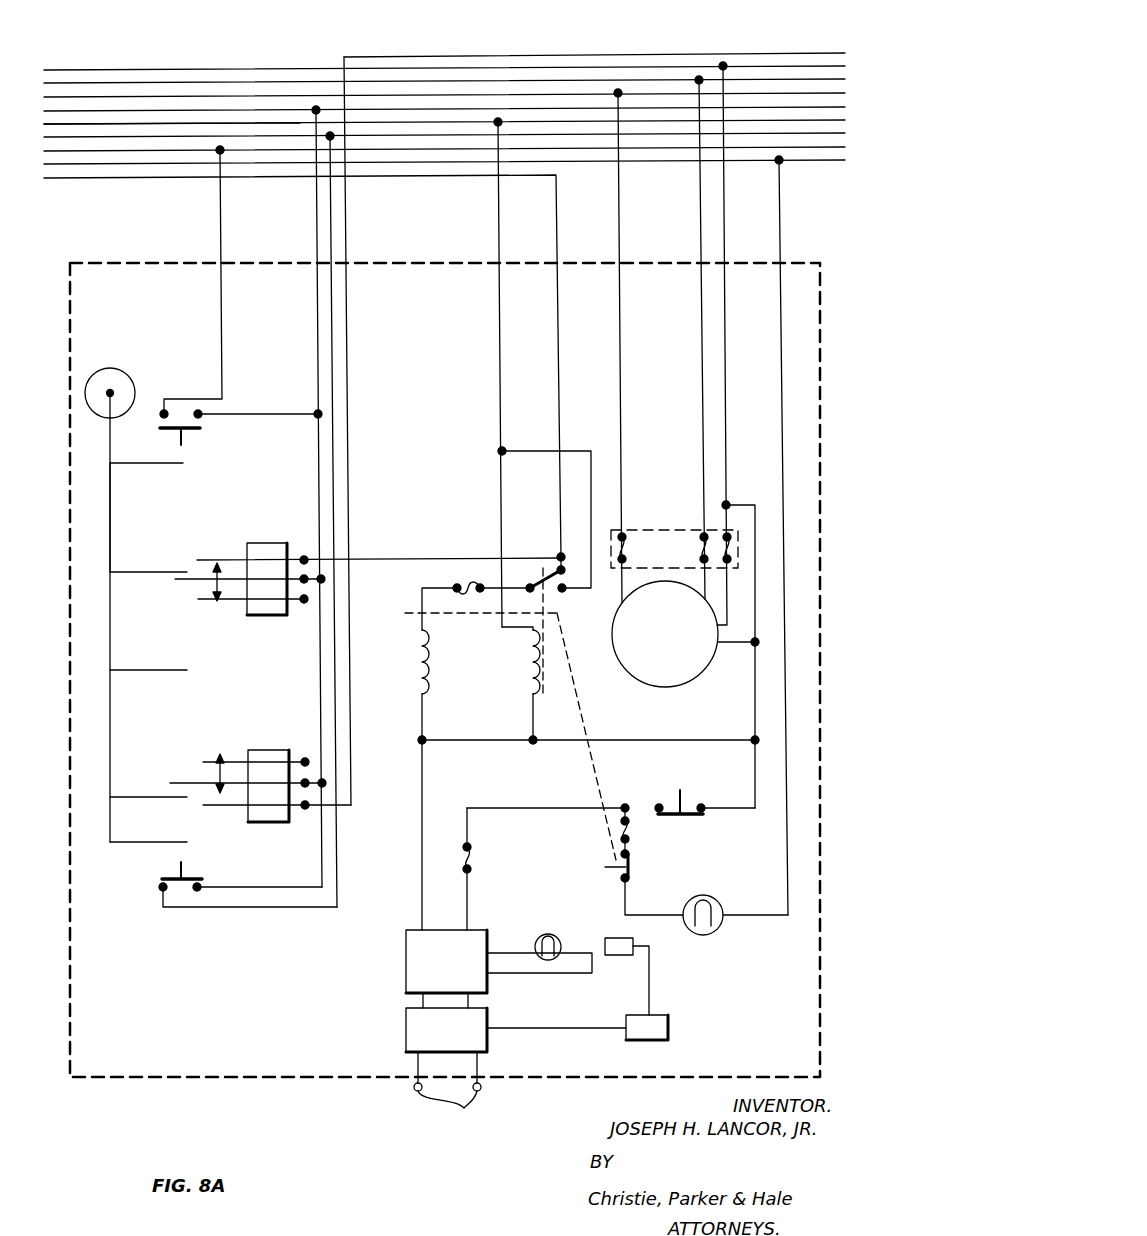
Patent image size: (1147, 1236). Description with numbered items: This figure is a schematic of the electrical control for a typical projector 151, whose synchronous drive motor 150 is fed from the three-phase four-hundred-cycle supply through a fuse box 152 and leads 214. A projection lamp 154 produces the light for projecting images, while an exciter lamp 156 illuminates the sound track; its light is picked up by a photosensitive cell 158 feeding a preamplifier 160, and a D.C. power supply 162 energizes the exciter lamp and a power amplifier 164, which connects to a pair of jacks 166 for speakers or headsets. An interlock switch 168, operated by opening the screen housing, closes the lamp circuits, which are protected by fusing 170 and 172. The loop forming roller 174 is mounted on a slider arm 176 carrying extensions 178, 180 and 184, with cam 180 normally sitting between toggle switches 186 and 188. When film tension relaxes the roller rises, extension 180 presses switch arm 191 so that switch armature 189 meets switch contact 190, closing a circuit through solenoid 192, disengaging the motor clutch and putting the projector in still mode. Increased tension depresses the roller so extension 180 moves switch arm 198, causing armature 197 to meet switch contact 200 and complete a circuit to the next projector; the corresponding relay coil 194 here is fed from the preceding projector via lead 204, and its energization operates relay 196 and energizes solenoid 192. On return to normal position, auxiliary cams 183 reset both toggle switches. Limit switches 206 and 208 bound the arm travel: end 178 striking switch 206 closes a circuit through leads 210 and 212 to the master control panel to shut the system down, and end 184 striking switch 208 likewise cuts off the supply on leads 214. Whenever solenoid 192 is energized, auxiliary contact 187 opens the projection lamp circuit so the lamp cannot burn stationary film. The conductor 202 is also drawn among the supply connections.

The synchronous drive motor 150 is at (670, 690).
The projector 151 is at (698, 36).
The fuse box 152 is at (675, 528).
The projection lamp 154 is at (718, 896).
The exciter lamp 156 is at (562, 905).
The photosensitive cell 158 is at (620, 936).
The preamplifier 160 is at (668, 1028).
The D.C. power supply 162 is at (406, 953).
The power amplifier 164 is at (406, 1025).
The jacks 166 is at (447, 1095).
The interlock switch 168 is at (690, 808).
The fusing 170 is at (470, 850).
The fusing 172 is at (628, 830).
The roller 174 is at (118, 368).
The slider arm 176 is at (110, 485).
The upper extension 178 is at (183, 463).
The extension 180 is at (137, 668).
The auxiliary extensions 183 is at (142, 572).
The end 184 is at (177, 817).
The toggle switch 186 is at (270, 543).
The auxiliary contact 187 is at (632, 872).
The toggle switch 188 is at (275, 742).
The switch armature 189 is at (233, 595).
The switch contact 190 is at (222, 556).
The switch arm 191 is at (188, 585).
The solenoid 192 is at (428, 635).
The relay coil 194 is at (538, 655).
The relay 196 is at (532, 587).
The armature 197 is at (216, 760).
The switch arm 198 is at (197, 785).
The switch contact 200 is at (240, 808).
The conductor 202 is at (437, 178).
The lead 204 is at (265, 123).
The limit switch 206 is at (195, 437).
The limit switch 208 is at (165, 868).
The lead 210 is at (221, 212).
The lead 212 is at (317, 212).
The leads 214 is at (140, 97).